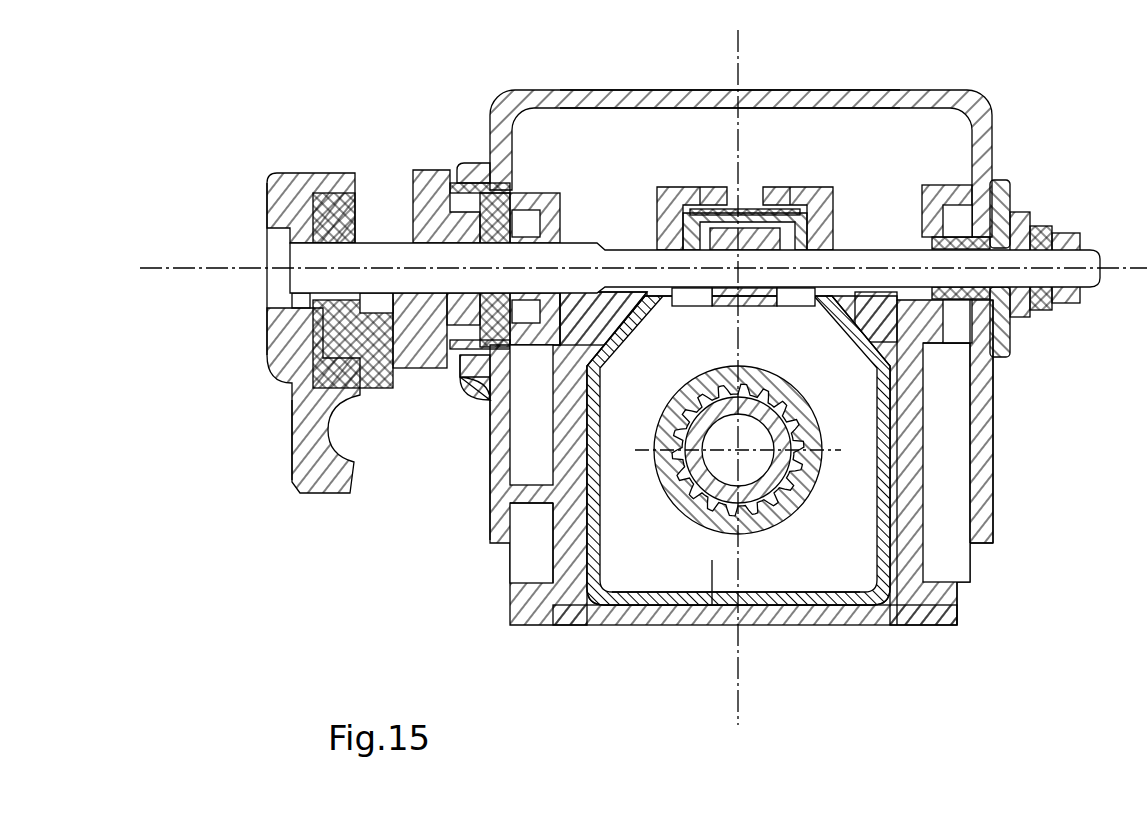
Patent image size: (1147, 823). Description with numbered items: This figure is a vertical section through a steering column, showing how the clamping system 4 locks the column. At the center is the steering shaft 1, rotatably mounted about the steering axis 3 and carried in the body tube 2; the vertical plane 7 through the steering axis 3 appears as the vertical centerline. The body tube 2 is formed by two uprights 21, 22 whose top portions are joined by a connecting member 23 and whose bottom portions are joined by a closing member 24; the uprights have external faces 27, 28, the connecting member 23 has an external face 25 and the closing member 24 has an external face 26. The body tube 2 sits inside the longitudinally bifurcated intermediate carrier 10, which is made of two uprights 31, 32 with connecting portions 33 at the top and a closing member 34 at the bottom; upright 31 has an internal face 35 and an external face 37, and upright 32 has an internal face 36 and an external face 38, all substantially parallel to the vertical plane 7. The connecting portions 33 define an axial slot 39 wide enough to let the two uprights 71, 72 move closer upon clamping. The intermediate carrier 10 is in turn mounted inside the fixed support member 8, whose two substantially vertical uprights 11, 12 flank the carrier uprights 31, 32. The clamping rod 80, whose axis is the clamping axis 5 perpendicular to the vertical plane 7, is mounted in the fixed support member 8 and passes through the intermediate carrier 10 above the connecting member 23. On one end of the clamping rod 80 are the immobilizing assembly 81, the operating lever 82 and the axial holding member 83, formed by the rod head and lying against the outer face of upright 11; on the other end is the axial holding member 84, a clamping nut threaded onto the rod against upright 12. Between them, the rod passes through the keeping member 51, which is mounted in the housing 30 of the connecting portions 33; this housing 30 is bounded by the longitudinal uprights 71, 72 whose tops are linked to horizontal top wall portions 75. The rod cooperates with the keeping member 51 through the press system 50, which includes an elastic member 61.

The steering shaft 1 is at (752, 460).
The body tube 2 is at (855, 608).
The steering axis 3 is at (712, 605).
The clamping system 4 is at (242, 283).
The clamping axis 5 is at (207, 265).
The vertical plane 7 is at (742, 682).
The fixed support member 8 is at (833, 99).
The intermediate carrier 10 is at (924, 438).
The upright 11 is at (560, 505).
The upright 12 is at (996, 496).
The upright 21 is at (590, 545).
The upright 22 is at (903, 542).
The connecting member 23 is at (770, 310).
The closing member 24 is at (800, 606).
The external face 25 is at (655, 300).
The external face 26 is at (633, 606).
The external face 27 is at (490, 438).
The external face 28 is at (995, 445).
The housing 30 is at (905, 96).
The upright 31 is at (560, 527).
The upright 32 is at (962, 516).
The connecting portions 33 is at (620, 300).
The closing member 34 is at (667, 610).
The internal face 35 is at (545, 458).
The internal face 36 is at (925, 462).
The external face 37 is at (490, 405).
The external face 38 is at (925, 385).
The axial slot 39 is at (757, 228).
The press system 50 is at (850, 137).
The keeping member 51 is at (790, 187).
The elastic member 61 is at (725, 187).
The longitudinal upright 71 is at (668, 205).
The longitudinal upright 72 is at (812, 212).
The top wall portions 75 is at (712, 222).
The clamping rod 80 is at (897, 240).
The immobilizing assembly 81 is at (402, 392).
The operating lever 82 is at (302, 404).
The axial holding member 83 is at (282, 242).
The axial holding member 84 is at (1065, 246).